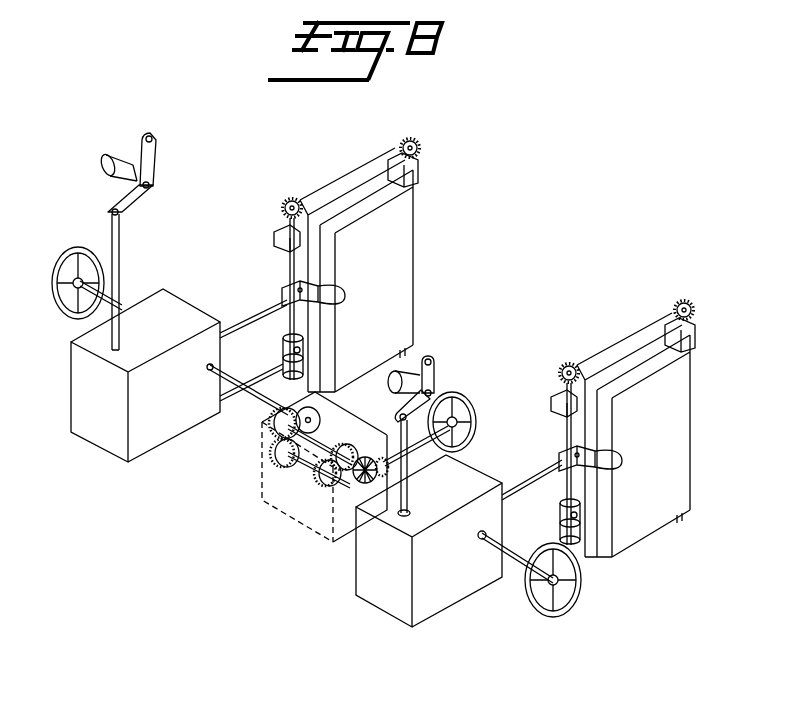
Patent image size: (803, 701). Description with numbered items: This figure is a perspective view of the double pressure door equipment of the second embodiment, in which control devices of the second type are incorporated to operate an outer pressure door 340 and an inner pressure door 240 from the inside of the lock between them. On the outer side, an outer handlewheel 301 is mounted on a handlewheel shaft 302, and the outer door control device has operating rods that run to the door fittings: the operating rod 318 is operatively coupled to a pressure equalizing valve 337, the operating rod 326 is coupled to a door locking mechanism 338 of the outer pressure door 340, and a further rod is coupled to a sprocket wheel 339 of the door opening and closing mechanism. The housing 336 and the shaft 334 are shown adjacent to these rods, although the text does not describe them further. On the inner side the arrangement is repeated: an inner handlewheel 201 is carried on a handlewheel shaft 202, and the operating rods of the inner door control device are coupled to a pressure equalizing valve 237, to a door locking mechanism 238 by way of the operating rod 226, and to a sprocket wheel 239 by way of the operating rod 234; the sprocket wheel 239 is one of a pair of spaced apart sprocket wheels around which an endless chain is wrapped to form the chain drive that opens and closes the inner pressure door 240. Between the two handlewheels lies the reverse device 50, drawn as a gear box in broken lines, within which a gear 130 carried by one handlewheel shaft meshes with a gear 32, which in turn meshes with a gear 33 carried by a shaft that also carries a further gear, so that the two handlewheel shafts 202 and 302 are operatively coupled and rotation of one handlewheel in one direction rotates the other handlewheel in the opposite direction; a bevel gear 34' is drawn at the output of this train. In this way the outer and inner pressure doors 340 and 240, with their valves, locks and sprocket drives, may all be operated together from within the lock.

The pressure equalizing valve 337 is at (152, 168).
The operating rod 318 is at (119, 237).
The outer handlewheel 301 is at (53, 293).
The handlewheel shaft 302 is at (122, 307).
The housing box 336 is at (182, 423).
The operating rod 326 is at (240, 325).
The shaft with bearing 334 is at (263, 380).
The outer pressure door 340 is at (415, 292).
The sprocket wheel 339 is at (288, 200).
The door locking mechanism 338 is at (346, 296).
The reverse device 50 is at (291, 526).
The gear 130 is at (316, 420).
The gear 32 is at (275, 430).
The gear 33 is at (275, 465).
The bevel gear shaft 34' is at (408, 479).
The pressure equalizing valve 237 is at (436, 372).
The operating rod 226 is at (518, 482).
The inner pressure door 240 is at (636, 540).
The sprocket wheel 239 is at (566, 363).
The door locking mechanism 238 is at (623, 462).
The operating rod 234 is at (560, 530).
The handlewheel shaft 202 is at (522, 563).
The inner handlewheel 201 is at (565, 615).